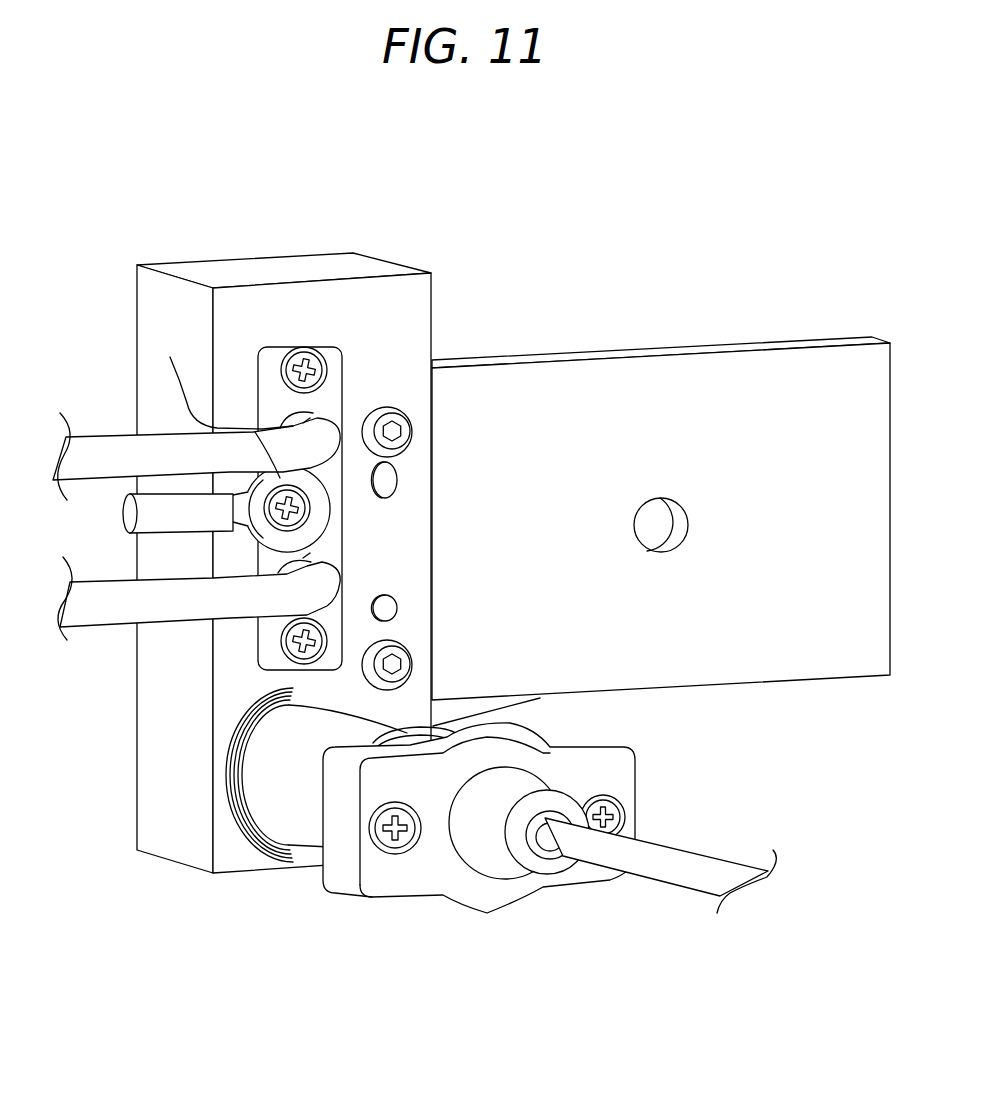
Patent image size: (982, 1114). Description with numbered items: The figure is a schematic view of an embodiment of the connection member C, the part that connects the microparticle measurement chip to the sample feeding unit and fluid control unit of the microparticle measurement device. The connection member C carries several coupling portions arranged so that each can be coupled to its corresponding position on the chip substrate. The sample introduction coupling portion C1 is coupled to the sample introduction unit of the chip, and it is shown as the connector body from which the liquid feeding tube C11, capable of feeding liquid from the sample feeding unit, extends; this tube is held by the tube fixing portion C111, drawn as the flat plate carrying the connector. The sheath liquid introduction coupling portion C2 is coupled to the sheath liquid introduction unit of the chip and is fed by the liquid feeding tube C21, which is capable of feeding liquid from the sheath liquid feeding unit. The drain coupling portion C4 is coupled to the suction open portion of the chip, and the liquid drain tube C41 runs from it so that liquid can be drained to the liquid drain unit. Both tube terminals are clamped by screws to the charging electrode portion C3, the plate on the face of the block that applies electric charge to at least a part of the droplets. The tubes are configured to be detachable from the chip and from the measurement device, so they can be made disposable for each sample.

The connection member C is at (460, 587).
The sample introduction coupling portion C1 is at (281, 795).
The liquid feeding tube C11 is at (643, 853).
The tube fixing portion C111 is at (463, 733).
The sheath liquid introduction coupling portion C2 is at (307, 568).
The liquid feeding tube C21 is at (143, 610).
The charging electrode portion C3 is at (277, 387).
The drain coupling portion C4 is at (305, 423).
The liquid drain tube C41 is at (198, 447).